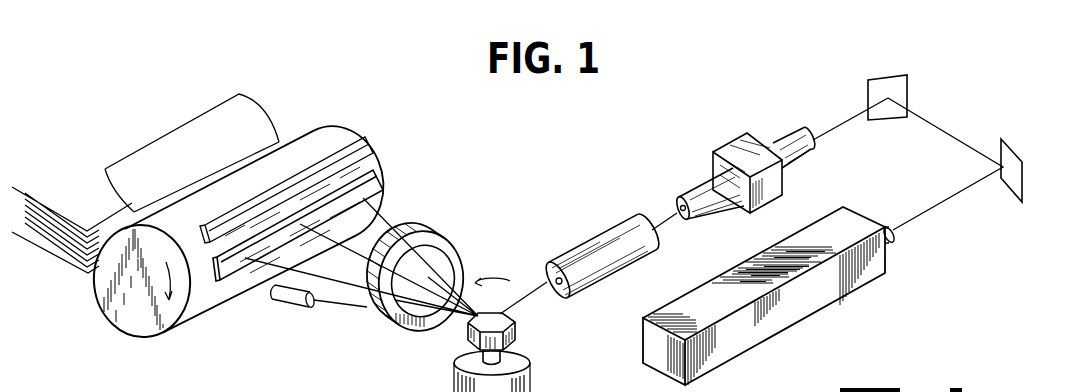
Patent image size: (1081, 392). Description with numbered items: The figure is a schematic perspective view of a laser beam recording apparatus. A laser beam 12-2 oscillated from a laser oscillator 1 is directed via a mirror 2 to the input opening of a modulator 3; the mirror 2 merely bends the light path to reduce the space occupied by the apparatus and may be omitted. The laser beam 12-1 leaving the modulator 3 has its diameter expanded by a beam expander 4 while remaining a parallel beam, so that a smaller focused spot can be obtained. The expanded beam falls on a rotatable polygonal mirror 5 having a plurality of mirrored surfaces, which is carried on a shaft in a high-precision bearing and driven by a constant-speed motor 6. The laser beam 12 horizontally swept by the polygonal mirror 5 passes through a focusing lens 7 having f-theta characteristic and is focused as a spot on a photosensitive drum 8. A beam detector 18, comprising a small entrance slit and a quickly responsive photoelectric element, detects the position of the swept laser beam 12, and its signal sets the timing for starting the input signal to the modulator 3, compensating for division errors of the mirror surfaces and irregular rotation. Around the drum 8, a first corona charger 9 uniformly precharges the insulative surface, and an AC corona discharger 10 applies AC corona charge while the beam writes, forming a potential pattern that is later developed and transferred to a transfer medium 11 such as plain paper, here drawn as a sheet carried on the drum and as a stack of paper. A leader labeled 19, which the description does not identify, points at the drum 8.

The laser oscillator 1 is at (783, 317).
The mirror 2 is at (888, 85).
The modulator 3 is at (751, 148).
The beam expander 4 is at (598, 246).
The rotatable polygonal mirror 5 is at (516, 323).
The constant-speed motor 6 is at (515, 371).
The focusing lens 7 is at (432, 260).
The photosensitive drum 8 is at (339, 143).
The first corona charger 9 is at (358, 148).
The AC corona discharger 10 is at (376, 185).
The transfer medium 11 is at (260, 108).
The laser beam 12 is at (372, 220).
The laser beam from the modulator 12-1 is at (268, 285).
The laser beam oscillated from the laser oscillator 12-2 is at (910, 225).
The beam detector 18 is at (290, 308).
The scanning direction 19 is at (340, 119).